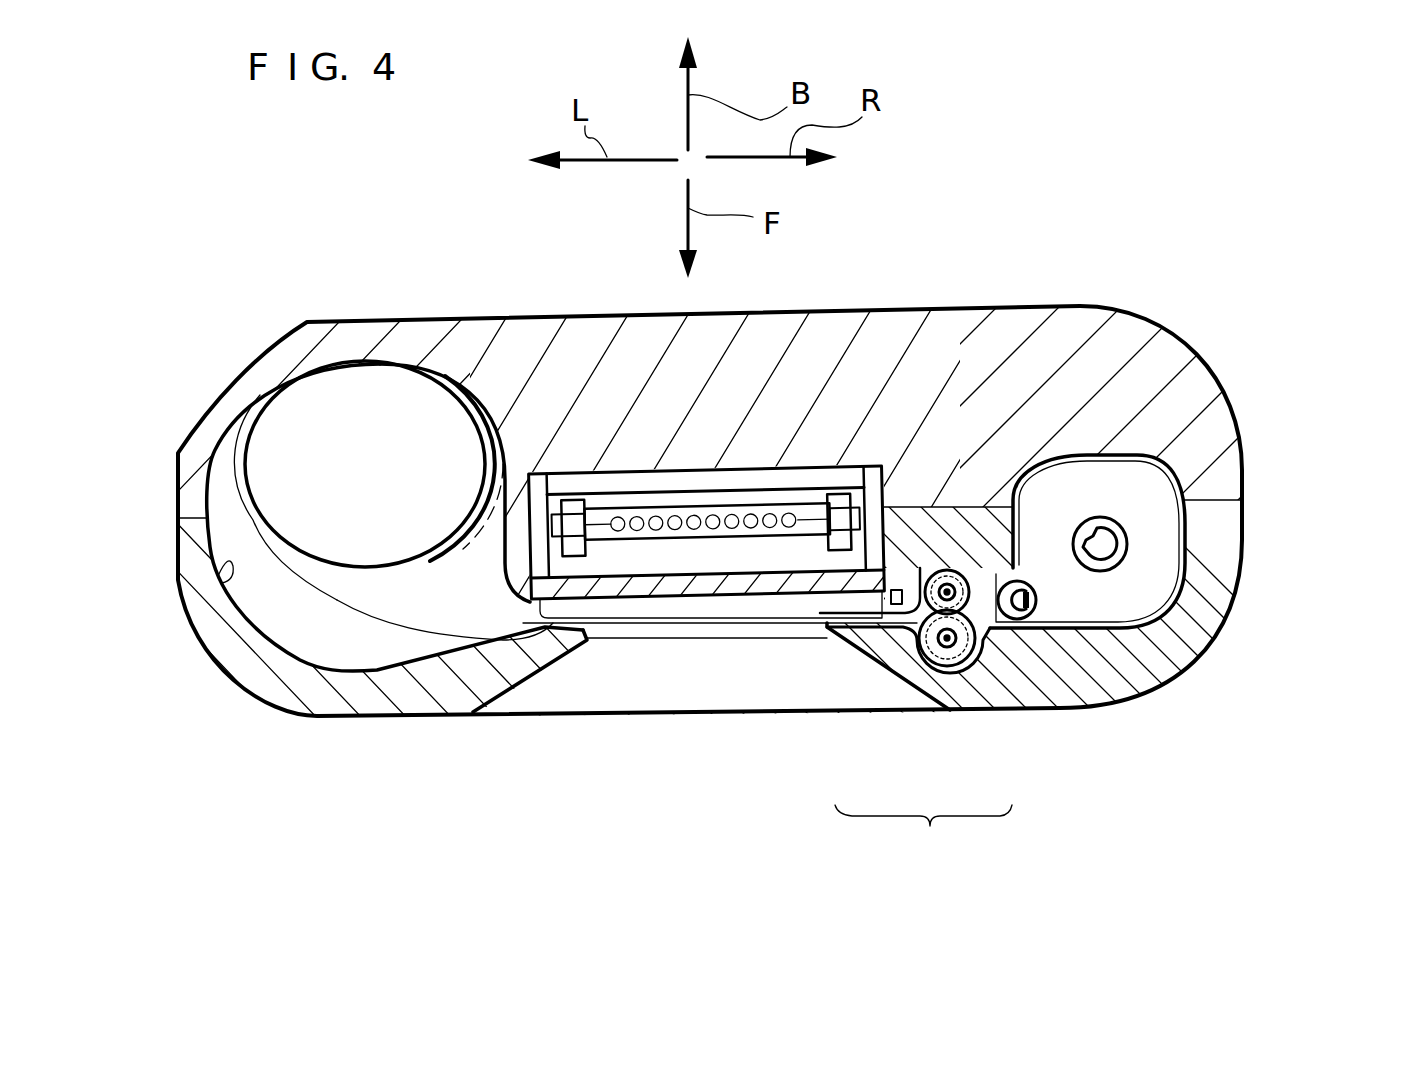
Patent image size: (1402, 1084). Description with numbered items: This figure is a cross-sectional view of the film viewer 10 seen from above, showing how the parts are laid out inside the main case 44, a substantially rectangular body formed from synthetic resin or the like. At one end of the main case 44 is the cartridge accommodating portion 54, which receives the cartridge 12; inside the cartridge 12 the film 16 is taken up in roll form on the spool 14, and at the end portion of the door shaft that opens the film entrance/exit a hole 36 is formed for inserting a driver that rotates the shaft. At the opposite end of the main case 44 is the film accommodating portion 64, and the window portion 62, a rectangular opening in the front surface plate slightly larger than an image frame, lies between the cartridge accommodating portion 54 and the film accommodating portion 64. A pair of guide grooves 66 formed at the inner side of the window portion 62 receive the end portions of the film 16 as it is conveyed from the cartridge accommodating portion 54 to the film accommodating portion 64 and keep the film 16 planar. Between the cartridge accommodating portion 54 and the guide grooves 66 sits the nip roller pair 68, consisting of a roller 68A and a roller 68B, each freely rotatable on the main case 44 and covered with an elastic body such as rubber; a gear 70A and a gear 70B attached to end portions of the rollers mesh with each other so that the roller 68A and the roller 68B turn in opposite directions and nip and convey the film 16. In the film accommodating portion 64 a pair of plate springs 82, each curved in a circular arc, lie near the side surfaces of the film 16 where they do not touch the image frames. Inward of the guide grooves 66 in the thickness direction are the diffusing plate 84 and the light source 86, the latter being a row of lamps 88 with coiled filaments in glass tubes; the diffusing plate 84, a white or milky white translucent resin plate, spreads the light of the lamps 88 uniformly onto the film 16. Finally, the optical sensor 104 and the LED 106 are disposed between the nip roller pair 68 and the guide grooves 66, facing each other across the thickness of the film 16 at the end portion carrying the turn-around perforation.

The film viewer 10 is at (1164, 326).
The cartridge 12 is at (1227, 587).
The spool 14 is at (1125, 557).
The film 16 is at (363, 600).
The hole 36 is at (1028, 620).
The main case 44 is at (1212, 375).
The cartridge accommodating portion 54 is at (1178, 546).
The window portion 62 is at (600, 642).
The film accommodating portion 64 is at (221, 586).
The guide grooves 66 is at (487, 629).
The nip roller pair 68 is at (923, 837).
The roller 68A is at (953, 657).
The roller 68B is at (940, 645).
The gear 70A is at (956, 655).
The gear 70B is at (1050, 708).
The plate springs 82 is at (445, 590).
The diffusing plate 84 is at (673, 600).
The light source 86 is at (752, 550).
The lamps 88 is at (713, 540).
The optical sensor 104 is at (900, 616).
The LED 106 is at (897, 606).